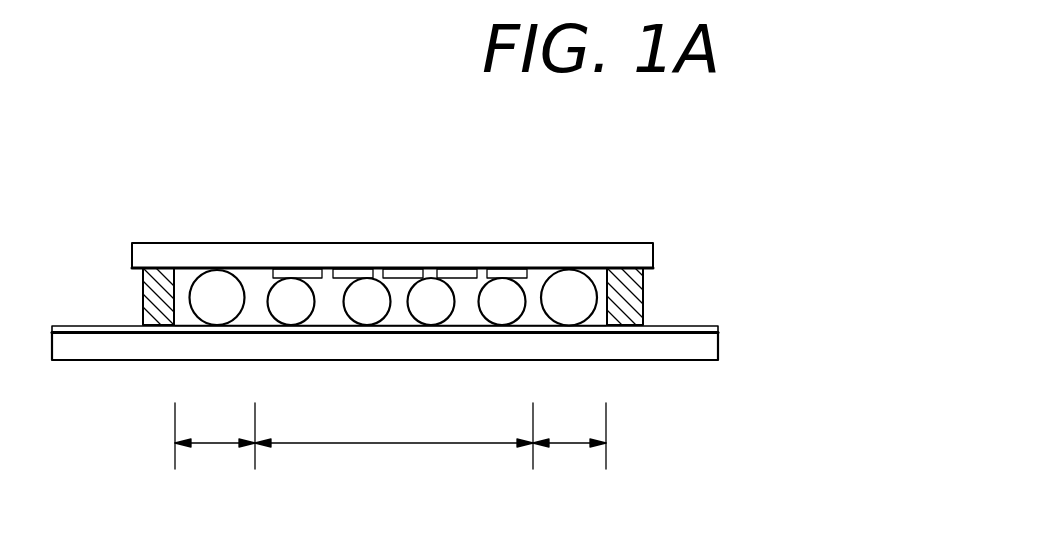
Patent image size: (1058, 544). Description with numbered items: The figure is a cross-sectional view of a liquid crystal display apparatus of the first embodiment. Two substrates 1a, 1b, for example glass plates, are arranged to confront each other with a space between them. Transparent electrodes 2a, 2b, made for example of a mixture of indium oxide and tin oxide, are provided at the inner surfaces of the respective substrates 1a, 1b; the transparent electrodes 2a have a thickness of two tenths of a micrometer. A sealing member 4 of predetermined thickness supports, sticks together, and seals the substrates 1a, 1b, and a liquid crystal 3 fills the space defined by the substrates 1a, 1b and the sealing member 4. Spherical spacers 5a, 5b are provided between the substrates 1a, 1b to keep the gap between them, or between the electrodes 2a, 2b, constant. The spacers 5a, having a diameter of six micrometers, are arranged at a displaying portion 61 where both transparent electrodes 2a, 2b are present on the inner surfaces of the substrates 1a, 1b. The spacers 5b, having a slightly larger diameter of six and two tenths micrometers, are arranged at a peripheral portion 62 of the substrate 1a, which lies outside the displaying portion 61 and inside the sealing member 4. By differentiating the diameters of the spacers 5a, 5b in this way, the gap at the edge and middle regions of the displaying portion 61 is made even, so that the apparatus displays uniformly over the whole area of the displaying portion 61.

The substrate 1a is at (653, 250).
The substrate 1b is at (710, 347).
The transparent electrodes 2a is at (408, 271).
The transparent electrode 2b is at (718, 330).
The liquid crystal 3 is at (328, 308).
The sealing member 4 is at (643, 297).
The spacers 5a is at (499, 291).
The spacers 5b is at (211, 282).
The displaying portion 61 is at (390, 445).
The peripheral portion 62 is at (213, 445).